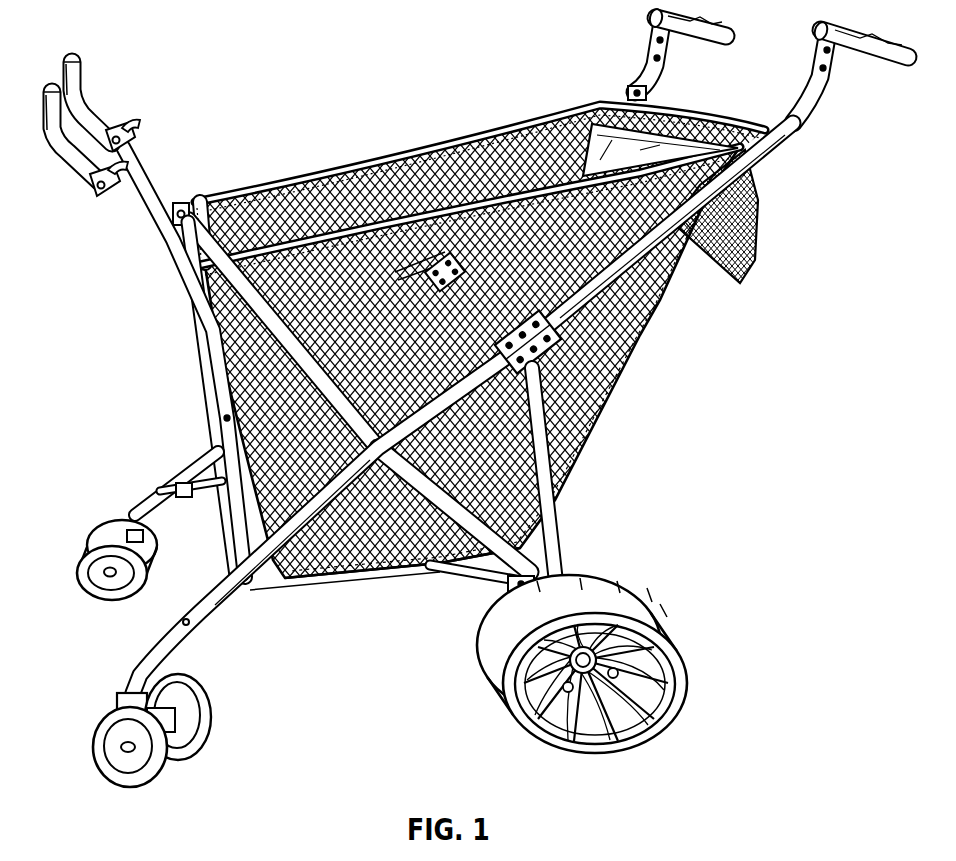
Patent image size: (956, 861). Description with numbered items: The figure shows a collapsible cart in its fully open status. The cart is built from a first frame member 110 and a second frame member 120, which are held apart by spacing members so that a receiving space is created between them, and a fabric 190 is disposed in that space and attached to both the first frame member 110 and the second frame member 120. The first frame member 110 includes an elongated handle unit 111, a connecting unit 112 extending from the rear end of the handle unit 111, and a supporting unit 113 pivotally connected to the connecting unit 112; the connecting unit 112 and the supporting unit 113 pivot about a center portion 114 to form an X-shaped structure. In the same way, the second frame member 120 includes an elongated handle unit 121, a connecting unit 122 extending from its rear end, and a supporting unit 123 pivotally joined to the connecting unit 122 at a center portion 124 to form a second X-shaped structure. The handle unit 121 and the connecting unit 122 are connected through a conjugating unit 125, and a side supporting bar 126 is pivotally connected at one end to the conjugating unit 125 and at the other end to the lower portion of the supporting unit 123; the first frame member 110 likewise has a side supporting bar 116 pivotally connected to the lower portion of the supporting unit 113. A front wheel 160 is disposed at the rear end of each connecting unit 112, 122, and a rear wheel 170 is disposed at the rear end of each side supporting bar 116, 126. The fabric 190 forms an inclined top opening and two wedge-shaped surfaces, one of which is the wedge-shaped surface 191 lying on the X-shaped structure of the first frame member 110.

The first frame member 110 is at (826, 124).
The elongated handle unit 111 is at (765, 195).
The connecting unit 112 is at (180, 616).
The supporting unit 113 is at (185, 268).
The center portion 114 is at (410, 520).
The side supporting bar 116 is at (553, 520).
The second frame member 120 is at (622, 53).
The elongated handle unit 121 is at (585, 126).
The connecting unit 122 is at (378, 305).
The supporting unit 123 is at (142, 145).
The center portion 124 is at (327, 350).
The conjugating unit 125 is at (383, 300).
The side supporting bar 126 is at (548, 375).
The front wheel 160 is at (105, 575).
The rear wheel 170 is at (645, 705).
The fabric 190 is at (684, 326).
The wedge-shaped surface 191 is at (300, 463).